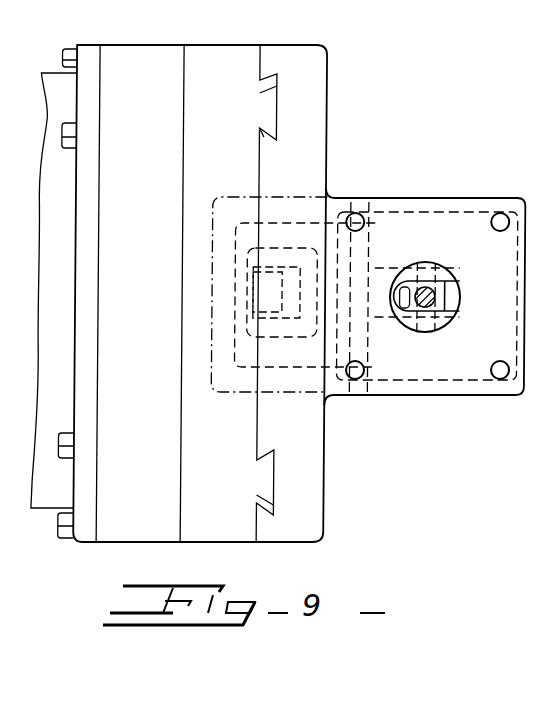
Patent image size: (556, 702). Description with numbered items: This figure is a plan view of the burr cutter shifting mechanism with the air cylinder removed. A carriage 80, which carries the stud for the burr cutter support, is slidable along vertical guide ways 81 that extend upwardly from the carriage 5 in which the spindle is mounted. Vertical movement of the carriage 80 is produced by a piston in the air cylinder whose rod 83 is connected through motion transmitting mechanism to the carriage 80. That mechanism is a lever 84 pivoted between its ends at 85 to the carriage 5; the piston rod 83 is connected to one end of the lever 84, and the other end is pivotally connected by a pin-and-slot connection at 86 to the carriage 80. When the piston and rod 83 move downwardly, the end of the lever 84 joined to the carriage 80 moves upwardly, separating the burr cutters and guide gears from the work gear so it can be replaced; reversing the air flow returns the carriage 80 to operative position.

The carriage 80 is at (206, 52).
The carriage 5 is at (316, 125).
The vertical guide ways 81 is at (270, 131).
The pivot 85 is at (346, 197).
The pin-and-slot connection 86 is at (274, 248).
The lever 84 is at (421, 266).
The rod 83 is at (440, 297).